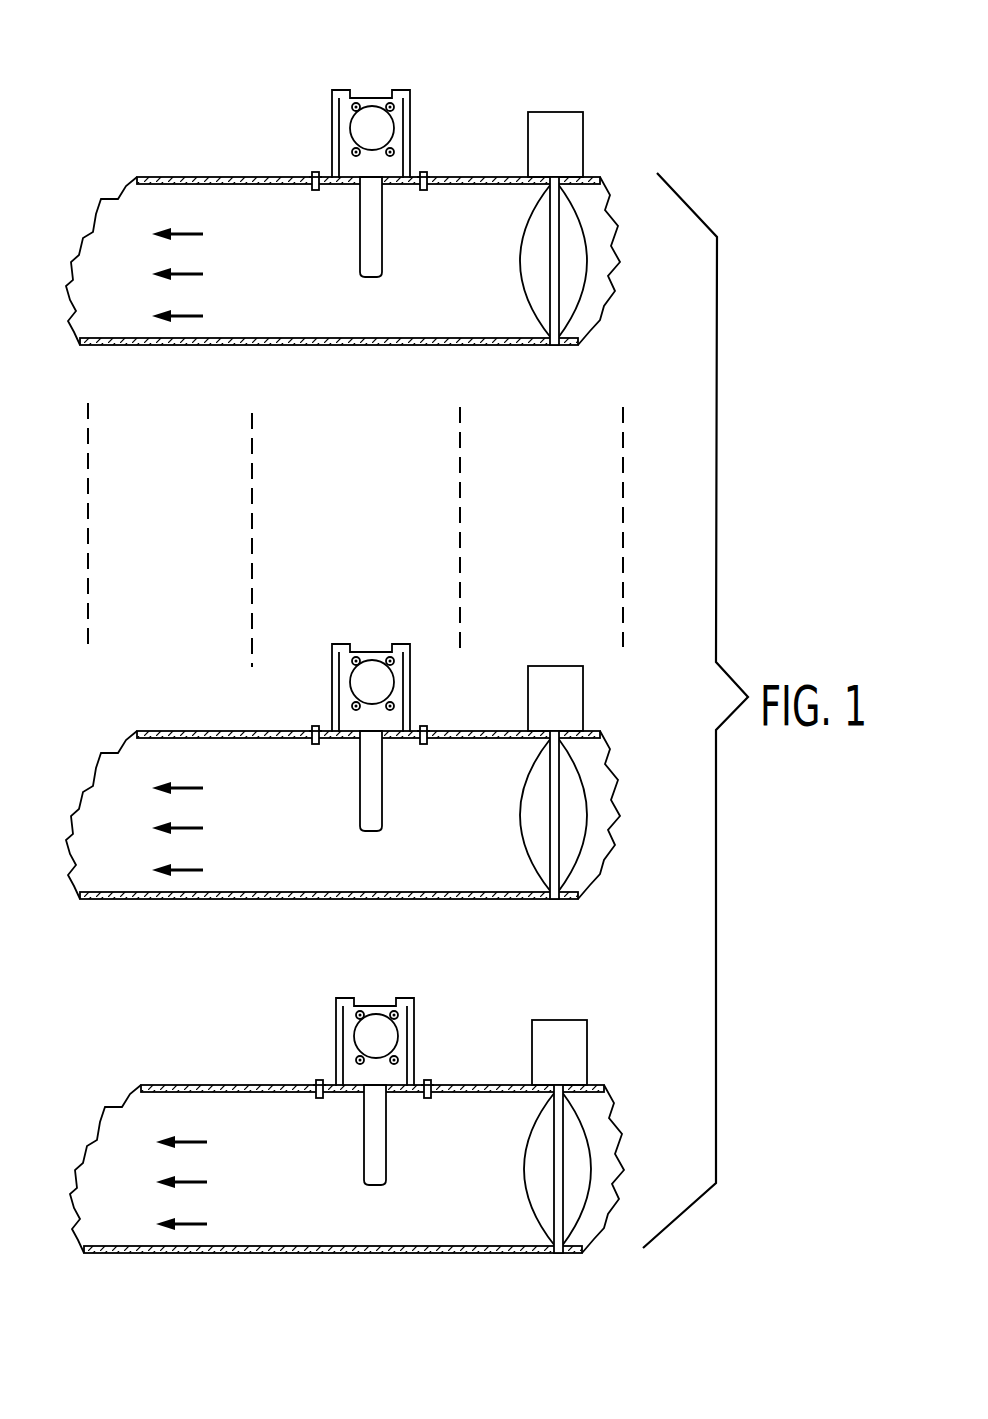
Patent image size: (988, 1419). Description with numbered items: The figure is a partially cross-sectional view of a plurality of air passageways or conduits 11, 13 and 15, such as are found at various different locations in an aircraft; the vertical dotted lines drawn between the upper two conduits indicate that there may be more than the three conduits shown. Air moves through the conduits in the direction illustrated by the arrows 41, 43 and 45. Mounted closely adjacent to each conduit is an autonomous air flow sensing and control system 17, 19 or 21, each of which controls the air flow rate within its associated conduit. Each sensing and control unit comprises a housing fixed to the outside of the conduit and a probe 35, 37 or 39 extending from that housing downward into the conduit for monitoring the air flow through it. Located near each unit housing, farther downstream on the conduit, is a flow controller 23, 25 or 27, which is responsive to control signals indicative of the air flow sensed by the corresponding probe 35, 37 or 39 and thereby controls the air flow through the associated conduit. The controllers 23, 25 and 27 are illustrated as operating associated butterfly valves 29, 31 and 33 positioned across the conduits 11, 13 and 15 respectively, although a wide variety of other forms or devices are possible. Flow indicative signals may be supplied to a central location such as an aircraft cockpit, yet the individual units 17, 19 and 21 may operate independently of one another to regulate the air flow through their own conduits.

The air flow conduit 11 is at (185, 177).
The air flow conduit 13 is at (160, 899).
The air flow conduit 15 is at (118, 1253).
The air flow sensing and control system 17 is at (498, 101).
The air flow sensing and control system 19 is at (500, 656).
The air flow sensing and control system 21 is at (514, 1024).
The flow controller 23 is at (556, 112).
The flow controller 25 is at (554, 666).
The flow controller 27 is at (564, 1020).
The butterfly valve 29 is at (522, 232).
The butterfly valve 31 is at (523, 786).
The butterfly valve 33 is at (528, 1132).
The probe 35 is at (360, 213).
The probe 37 is at (360, 790).
The probe 39 is at (364, 1137).
The air flow arrows 41 is at (184, 272).
The air flow arrows 43 is at (188, 868).
The air flow arrows 45 is at (190, 1180).